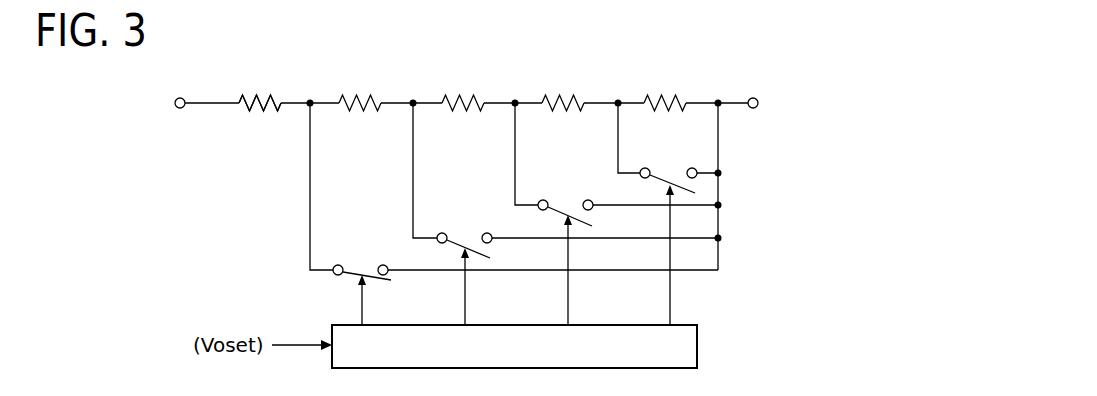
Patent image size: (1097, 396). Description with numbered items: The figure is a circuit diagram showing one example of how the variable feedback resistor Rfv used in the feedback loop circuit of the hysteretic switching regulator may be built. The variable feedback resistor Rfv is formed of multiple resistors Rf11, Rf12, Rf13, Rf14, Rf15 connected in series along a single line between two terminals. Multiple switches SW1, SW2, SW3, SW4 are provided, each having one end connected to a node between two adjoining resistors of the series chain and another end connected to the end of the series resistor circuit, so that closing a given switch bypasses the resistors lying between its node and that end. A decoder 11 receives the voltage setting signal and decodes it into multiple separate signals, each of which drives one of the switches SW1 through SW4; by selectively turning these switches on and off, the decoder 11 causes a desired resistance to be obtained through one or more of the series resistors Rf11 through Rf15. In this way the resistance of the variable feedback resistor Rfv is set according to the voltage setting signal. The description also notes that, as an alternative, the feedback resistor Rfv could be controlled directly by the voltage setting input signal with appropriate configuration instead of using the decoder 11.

The decoder 11 is at (697, 348).
The variable feedback resistor Rfv is at (700, 47).
The resistor Rf11 is at (261, 89).
The resistor Rf12 is at (362, 89).
The resistor Rf13 is at (465, 89).
The resistor Rf14 is at (564, 89).
The resistor Rf15 is at (666, 89).
The switch SW1 is at (514, 214).
The switch SW2 is at (565, 214).
The switch SW3 is at (616, 214).
The switch SW4 is at (668, 214).